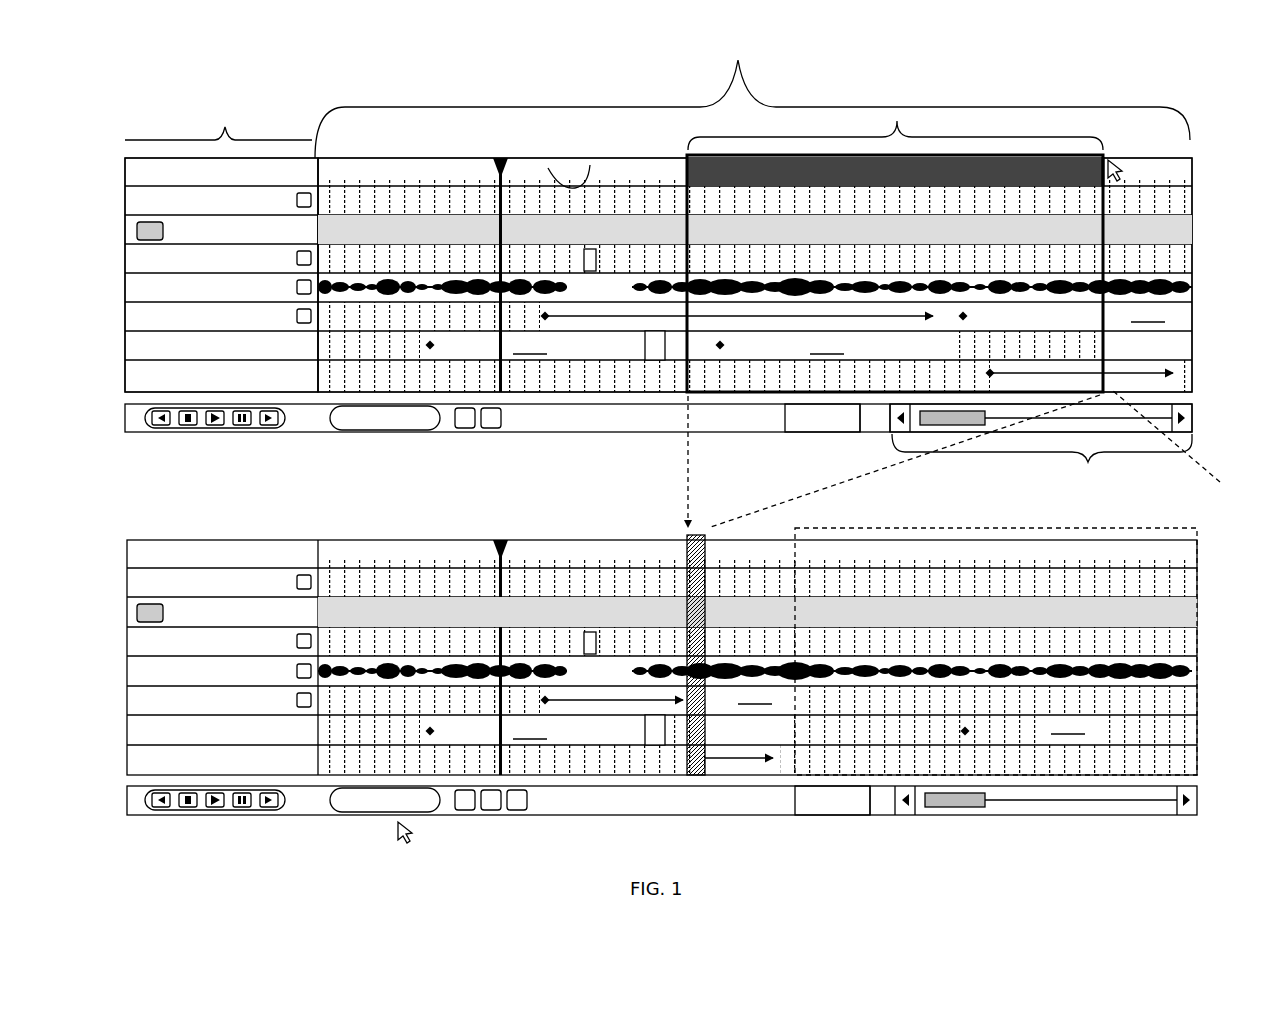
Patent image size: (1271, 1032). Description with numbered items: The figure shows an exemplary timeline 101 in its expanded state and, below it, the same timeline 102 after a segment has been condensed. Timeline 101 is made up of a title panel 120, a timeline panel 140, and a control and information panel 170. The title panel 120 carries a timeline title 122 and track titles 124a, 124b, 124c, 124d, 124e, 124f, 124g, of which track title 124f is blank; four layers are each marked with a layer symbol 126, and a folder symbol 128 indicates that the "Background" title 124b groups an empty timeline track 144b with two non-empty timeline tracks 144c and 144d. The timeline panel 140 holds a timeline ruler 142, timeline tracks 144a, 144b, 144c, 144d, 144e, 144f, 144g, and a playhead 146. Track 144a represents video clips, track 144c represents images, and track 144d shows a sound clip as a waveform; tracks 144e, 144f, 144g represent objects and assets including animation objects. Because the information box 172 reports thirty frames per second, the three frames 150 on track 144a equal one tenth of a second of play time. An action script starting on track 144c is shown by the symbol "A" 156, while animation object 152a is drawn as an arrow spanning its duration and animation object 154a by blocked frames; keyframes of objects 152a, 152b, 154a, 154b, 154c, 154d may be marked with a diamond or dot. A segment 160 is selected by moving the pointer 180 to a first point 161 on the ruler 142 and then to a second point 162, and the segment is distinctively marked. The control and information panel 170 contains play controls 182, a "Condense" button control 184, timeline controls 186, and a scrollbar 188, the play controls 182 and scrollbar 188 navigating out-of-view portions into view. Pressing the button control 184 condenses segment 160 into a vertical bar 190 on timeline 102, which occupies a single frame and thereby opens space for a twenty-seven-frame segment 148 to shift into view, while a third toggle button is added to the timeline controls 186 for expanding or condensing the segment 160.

The timeline 101 is at (655, 457).
The timeline 102 is at (632, 672).
The title panel 120 is at (226, 120).
The timeline title 122 is at (182, 173).
The track title 124a is at (162, 200).
The track title 124b is at (166, 221).
The track title 124c is at (167, 262).
The track title 124d is at (167, 291).
The track title 124e is at (162, 318).
The track title 124f is at (167, 350).
The track title 124g is at (167, 378).
The layer symbol 126 is at (304, 326).
The folder symbol 128 is at (135, 234).
The timeline panel 140 is at (741, 62).
The timeline ruler 142 is at (1197, 163).
The timeline track 144a is at (1196, 199).
The timeline track 144b is at (1196, 229).
The timeline track 144c is at (1196, 259).
The timeline track 144d is at (1196, 289).
The timeline track 144e is at (1196, 318).
The timeline track 144f is at (1196, 348).
The timeline track 144g is at (1196, 377).
The playhead 146 is at (478, 447).
The segment 148 is at (985, 528).
The frames 150 is at (547, 157).
The animation object 152a is at (655, 400).
The animation object 152b is at (706, 790).
The animation object 154a is at (1062, 315).
The animation object 154b is at (487, 347).
The animation object 154c is at (780, 347).
The animation object 154d is at (1068, 727).
The symbol "A" 156 is at (590, 170).
The segment 160 is at (900, 122).
The first point 161 is at (592, 248).
The second point 162 is at (1104, 162).
The control and information panel 170 is at (648, 634).
The information box 172 is at (786, 434).
The pointer 180 is at (1118, 165).
The play controls 182 is at (148, 434).
The button control 184 is at (435, 434).
The timeline controls 186 is at (467, 431).
The scrollbar 188 is at (1090, 466).
The vertical bar 190 is at (686, 526).